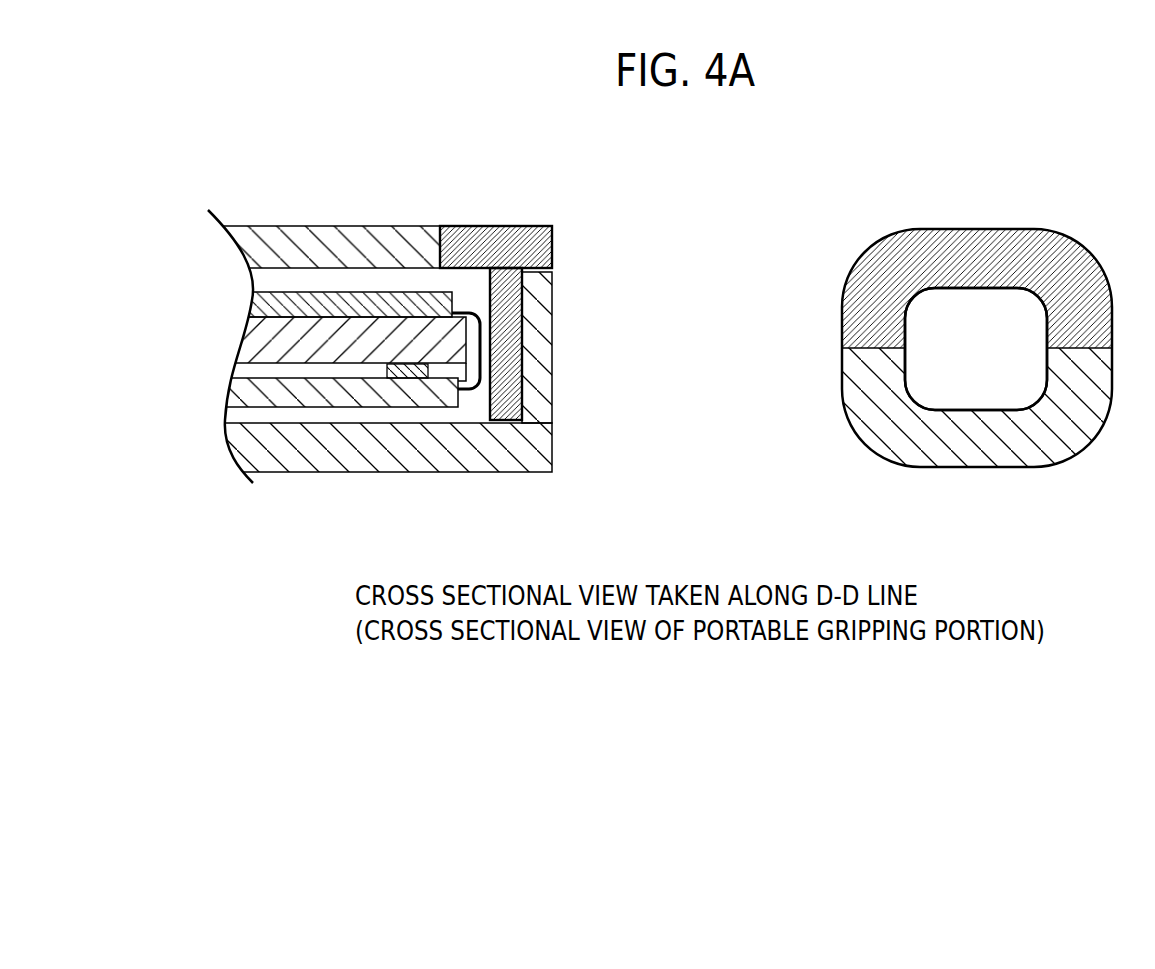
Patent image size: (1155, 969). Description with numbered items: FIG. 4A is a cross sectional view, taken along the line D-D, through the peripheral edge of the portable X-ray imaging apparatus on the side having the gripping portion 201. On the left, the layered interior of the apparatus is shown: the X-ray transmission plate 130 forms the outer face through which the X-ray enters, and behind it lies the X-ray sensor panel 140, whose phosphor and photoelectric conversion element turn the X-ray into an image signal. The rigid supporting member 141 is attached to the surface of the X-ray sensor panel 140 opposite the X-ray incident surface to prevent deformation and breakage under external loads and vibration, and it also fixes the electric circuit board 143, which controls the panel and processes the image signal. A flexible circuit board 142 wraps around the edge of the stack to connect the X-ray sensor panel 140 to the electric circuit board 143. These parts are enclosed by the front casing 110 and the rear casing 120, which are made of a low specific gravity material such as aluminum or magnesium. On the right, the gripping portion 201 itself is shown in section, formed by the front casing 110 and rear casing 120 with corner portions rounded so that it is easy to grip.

The front casing 110 is at (518, 225).
The rear casing 120 is at (530, 473).
The X-ray transmission plate 130 is at (318, 225).
The X-ray sensor panel 140 is at (257, 308).
The rigid supporting member 141 is at (247, 345).
The flexible circuit board 142 is at (472, 390).
The electric circuit board 143 is at (235, 395).
The gripping portion 201 is at (973, 229).